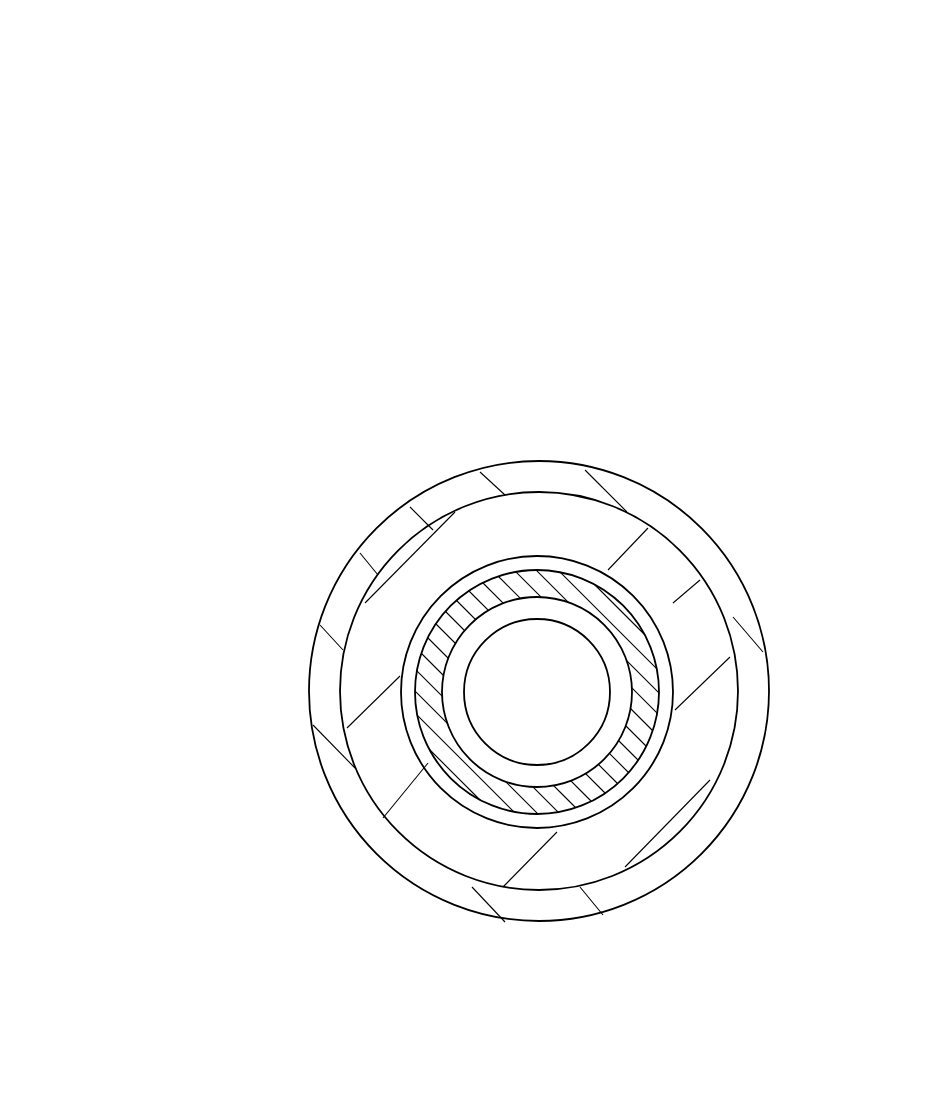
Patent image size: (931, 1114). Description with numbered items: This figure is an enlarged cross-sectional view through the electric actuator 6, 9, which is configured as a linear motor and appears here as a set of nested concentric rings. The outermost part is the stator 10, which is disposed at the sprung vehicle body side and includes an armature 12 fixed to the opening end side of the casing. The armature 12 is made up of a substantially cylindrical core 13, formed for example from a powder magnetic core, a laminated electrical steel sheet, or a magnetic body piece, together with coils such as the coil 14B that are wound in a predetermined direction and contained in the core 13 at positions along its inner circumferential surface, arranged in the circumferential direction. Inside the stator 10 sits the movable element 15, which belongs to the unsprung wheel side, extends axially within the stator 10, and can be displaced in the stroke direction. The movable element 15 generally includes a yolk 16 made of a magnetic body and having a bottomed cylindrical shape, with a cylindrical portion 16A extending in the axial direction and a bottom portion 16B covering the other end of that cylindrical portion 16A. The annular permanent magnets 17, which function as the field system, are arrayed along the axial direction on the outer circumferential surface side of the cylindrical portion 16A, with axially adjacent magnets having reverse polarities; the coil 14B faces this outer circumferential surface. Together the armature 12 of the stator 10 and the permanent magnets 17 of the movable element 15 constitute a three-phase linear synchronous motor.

The electric actuator 6 is at (418, 490).
The electric actuator 9 is at (534, 684).
The stator 10 is at (703, 518).
The armature 12 is at (330, 800).
The core 13 is at (707, 838).
The coil 14B is at (717, 705).
The movable element 15 is at (648, 622).
The yolk 16 is at (417, 762).
The cylindrical portion 16A is at (467, 740).
The bottom portion 16B is at (585, 735).
The permanent magnets 17 is at (453, 613).